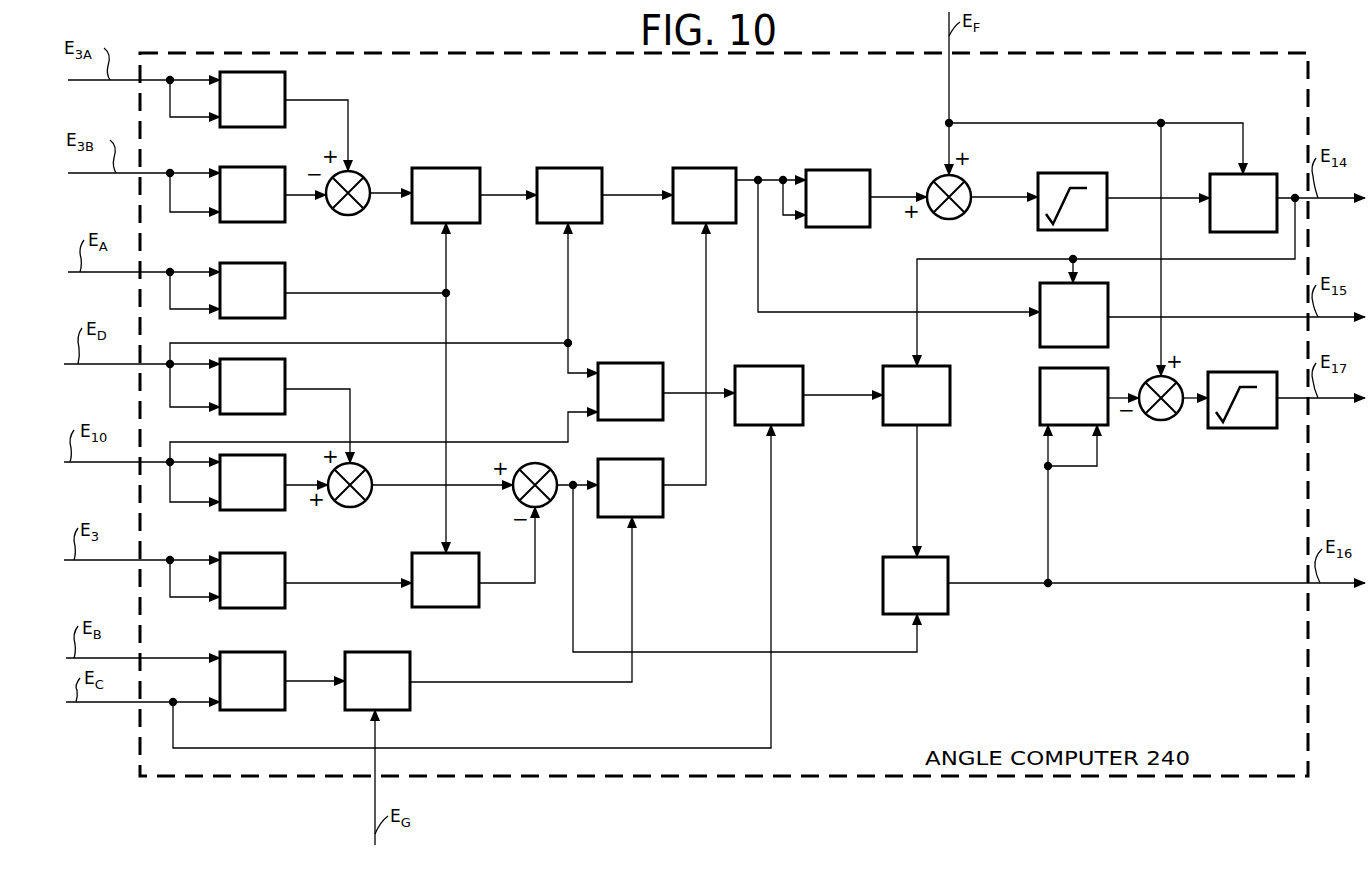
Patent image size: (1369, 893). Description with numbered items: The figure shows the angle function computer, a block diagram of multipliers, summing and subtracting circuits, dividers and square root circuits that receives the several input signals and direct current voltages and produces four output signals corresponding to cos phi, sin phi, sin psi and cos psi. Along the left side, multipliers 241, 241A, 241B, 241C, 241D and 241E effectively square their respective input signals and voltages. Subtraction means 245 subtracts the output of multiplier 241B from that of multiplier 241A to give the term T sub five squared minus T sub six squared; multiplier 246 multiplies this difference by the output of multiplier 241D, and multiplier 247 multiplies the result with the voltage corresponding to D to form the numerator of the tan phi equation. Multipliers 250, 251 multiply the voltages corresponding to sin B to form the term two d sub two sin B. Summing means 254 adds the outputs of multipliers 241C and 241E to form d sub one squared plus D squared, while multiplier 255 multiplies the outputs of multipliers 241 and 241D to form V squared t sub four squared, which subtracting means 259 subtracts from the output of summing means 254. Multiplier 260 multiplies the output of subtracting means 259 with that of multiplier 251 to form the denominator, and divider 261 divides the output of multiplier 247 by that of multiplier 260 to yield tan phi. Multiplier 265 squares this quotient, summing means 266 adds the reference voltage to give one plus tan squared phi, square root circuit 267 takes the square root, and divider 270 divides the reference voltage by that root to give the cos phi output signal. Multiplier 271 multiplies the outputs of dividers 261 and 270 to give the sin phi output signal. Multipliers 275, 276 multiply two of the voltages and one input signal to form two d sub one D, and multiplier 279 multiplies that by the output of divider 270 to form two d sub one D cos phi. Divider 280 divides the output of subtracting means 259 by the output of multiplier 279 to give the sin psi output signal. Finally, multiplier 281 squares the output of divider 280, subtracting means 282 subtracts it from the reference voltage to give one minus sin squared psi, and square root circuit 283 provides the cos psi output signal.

The multiplier 241 is at (240, 608).
The multiplier 241A is at (285, 81).
The multiplier 241B is at (228, 167).
The multiplier 241C is at (225, 512).
The multiplier 241D is at (233, 263).
The multiplier 241E is at (285, 381).
The subtraction means 245 is at (340, 214).
The multiplier 246 is at (428, 168).
The multiplier 247 is at (551, 168).
The multiplier 250 is at (229, 710).
The multiplier 251 is at (410, 704).
The summing means 254 is at (366, 479).
The multiplier 255 is at (445, 607).
The subtracting means 259 is at (516, 500).
The multiplier 260 is at (606, 459).
The divider 261 is at (718, 168).
The multiplier 265 is at (850, 170).
The summing means 266 is at (950, 219).
The square root circuit 267 is at (1078, 173).
The divider 270 is at (1222, 174).
The multiplier 271 is at (1107, 296).
The multiplier 275 is at (606, 363).
The multiplier 276 is at (782, 366).
The multiplier 279 is at (900, 366).
The divider 280 is at (948, 605).
The multiplier 281 is at (1040, 393).
The subtracting means 282 is at (1148, 418).
The square root circuit 283 is at (1246, 372).